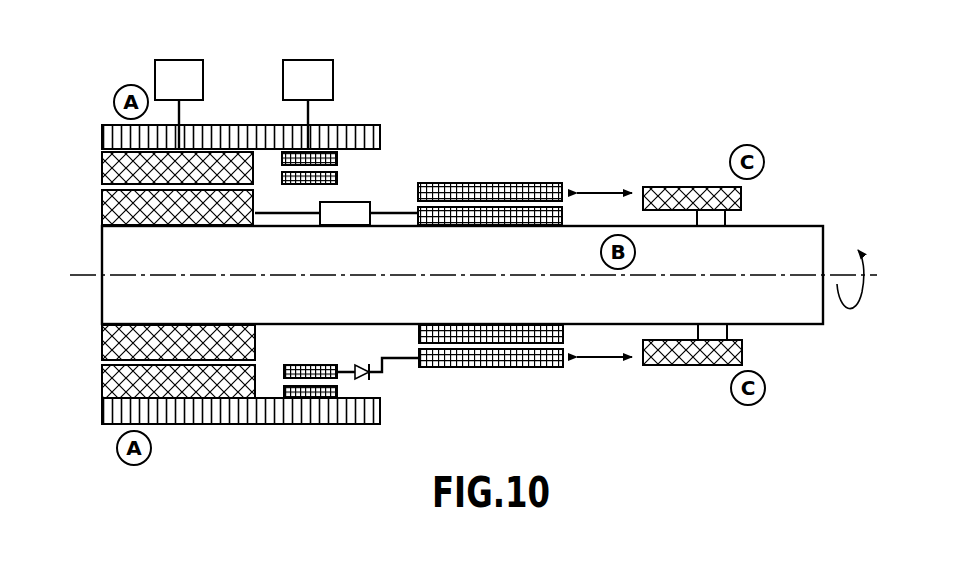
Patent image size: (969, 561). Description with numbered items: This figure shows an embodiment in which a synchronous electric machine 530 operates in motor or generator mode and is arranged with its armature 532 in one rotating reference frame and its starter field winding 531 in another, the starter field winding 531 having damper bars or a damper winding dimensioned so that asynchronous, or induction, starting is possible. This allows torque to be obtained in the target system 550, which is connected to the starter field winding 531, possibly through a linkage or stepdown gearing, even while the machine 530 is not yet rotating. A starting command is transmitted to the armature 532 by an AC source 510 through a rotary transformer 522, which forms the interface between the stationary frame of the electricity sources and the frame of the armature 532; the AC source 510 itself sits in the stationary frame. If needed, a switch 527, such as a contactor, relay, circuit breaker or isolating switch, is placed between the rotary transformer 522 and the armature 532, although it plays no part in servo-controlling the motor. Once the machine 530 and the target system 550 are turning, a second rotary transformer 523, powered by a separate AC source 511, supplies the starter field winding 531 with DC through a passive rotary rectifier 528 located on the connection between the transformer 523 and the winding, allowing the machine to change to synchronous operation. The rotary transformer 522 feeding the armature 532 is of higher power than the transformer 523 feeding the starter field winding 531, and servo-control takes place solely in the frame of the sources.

The AC source 510 is at (200, 67).
The AC source 511 is at (328, 67).
The rotary transformer 522 is at (92, 188).
The second rotary transformer 523 is at (338, 159).
The switch 527 is at (340, 215).
The passive rotary rectifier 528 is at (359, 363).
The synchronous electric machine 530 is at (498, 255).
The starter field winding 531 is at (510, 183).
The armature 532 is at (548, 183).
The target system 550 is at (696, 187).